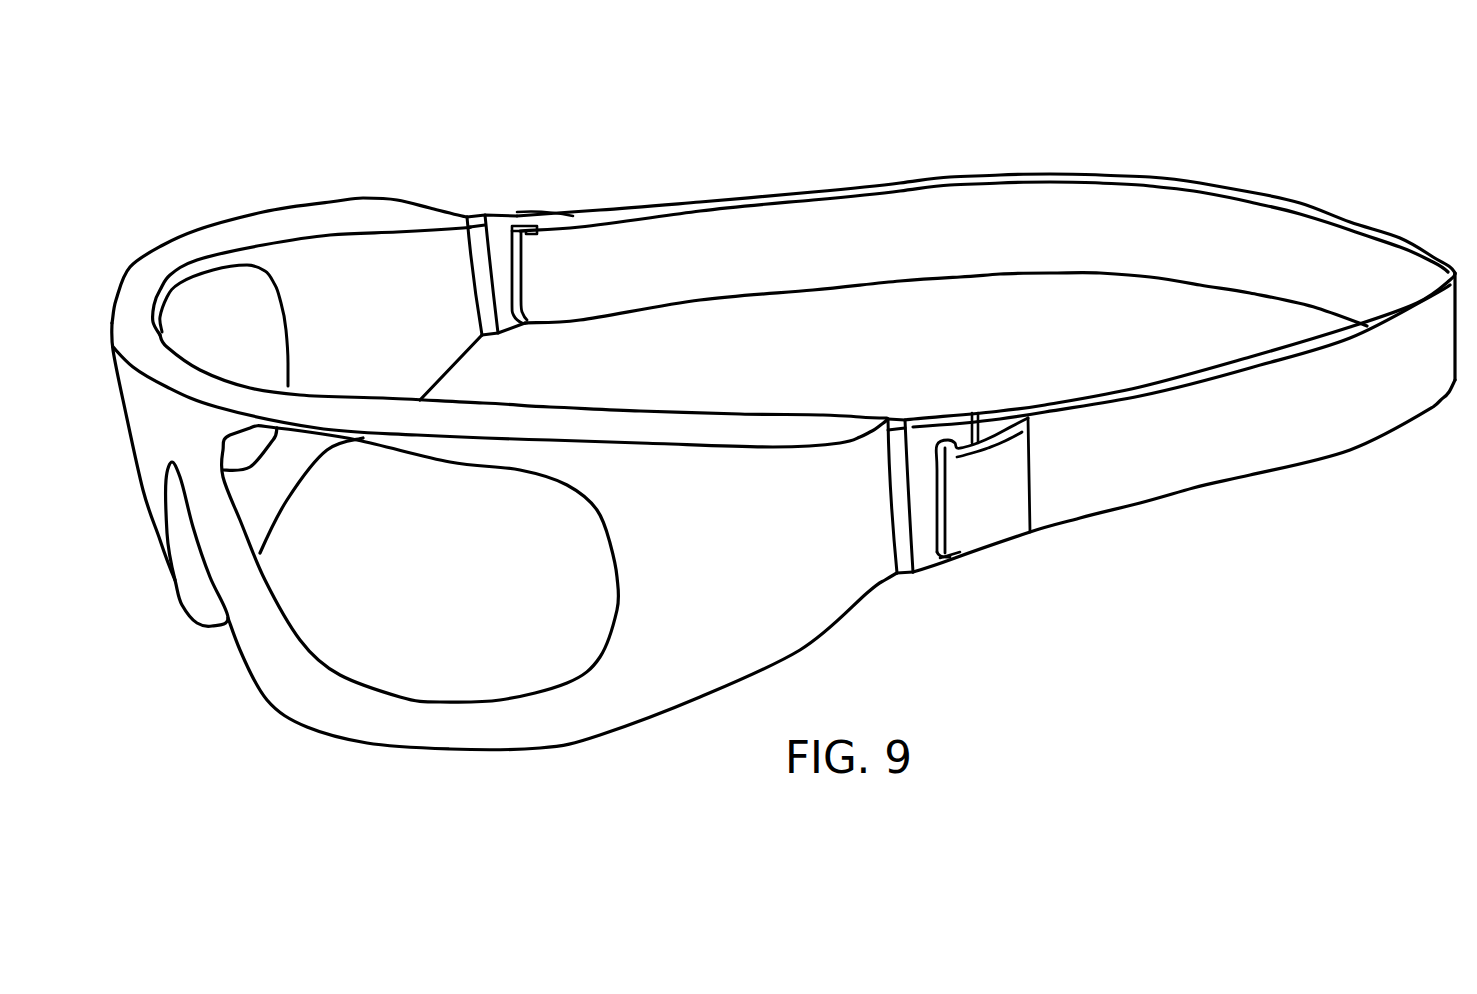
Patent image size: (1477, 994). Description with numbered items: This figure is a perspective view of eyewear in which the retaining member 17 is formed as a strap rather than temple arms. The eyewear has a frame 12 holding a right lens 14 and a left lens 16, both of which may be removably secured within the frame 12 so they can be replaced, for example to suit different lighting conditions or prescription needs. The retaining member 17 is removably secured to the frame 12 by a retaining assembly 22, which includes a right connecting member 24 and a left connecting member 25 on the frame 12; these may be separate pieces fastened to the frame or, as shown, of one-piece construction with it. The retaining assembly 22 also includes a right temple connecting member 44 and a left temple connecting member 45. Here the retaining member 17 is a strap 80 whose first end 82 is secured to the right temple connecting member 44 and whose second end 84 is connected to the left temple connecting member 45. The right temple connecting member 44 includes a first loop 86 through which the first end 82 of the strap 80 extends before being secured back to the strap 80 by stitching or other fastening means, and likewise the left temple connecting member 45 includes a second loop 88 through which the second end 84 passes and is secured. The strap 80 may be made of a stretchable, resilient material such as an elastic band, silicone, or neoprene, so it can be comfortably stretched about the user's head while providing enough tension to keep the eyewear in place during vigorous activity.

The frame 12 is at (742, 547).
The right lens 14 is at (279, 326).
The left lens 16 is at (452, 574).
The retaining member 17 is at (1193, 168).
The retaining assembly 22 is at (472, 201).
The right connecting member 24 is at (496, 336).
The left connecting member 25 is at (897, 564).
The right temple connecting member 44 is at (503, 218).
The left temple connecting member 45 is at (925, 420).
The strap 80 is at (948, 190).
The first end 82 is at (560, 218).
The second end 84 is at (1005, 522).
The first loop 86 is at (522, 295).
The second loop 88 is at (950, 560).